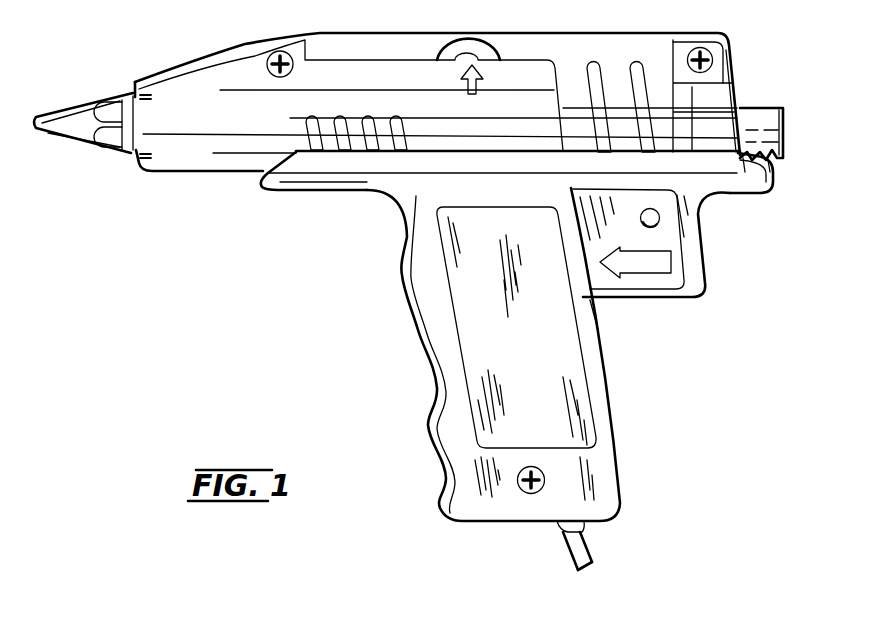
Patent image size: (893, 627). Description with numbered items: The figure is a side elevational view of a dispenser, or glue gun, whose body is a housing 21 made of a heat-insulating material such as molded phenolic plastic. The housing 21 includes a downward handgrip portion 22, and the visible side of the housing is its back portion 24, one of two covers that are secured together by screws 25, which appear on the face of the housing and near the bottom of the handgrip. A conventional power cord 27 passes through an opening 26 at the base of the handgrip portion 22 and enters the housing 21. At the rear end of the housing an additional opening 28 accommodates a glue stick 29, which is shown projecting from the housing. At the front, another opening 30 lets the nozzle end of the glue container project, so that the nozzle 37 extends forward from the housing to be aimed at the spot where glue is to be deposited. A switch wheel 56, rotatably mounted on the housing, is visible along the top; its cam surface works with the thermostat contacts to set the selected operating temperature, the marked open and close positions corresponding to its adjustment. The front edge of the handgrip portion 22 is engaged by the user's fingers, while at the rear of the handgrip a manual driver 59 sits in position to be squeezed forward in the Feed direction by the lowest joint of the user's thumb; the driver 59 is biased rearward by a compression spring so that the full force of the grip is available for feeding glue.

The housing 21 is at (315, 212).
The handgrip portion 22 is at (418, 245).
The back portion 24 is at (546, 352).
The screws 25 is at (249, 78).
The opening 26 is at (587, 533).
The power cord 27 is at (573, 556).
The additional opening 28 is at (737, 105).
The glue stick 29 is at (770, 130).
The additional opening 30 is at (137, 153).
The nozzle 37 is at (62, 132).
The switch wheel 56 is at (480, 34).
The manual driver 59 is at (665, 297).